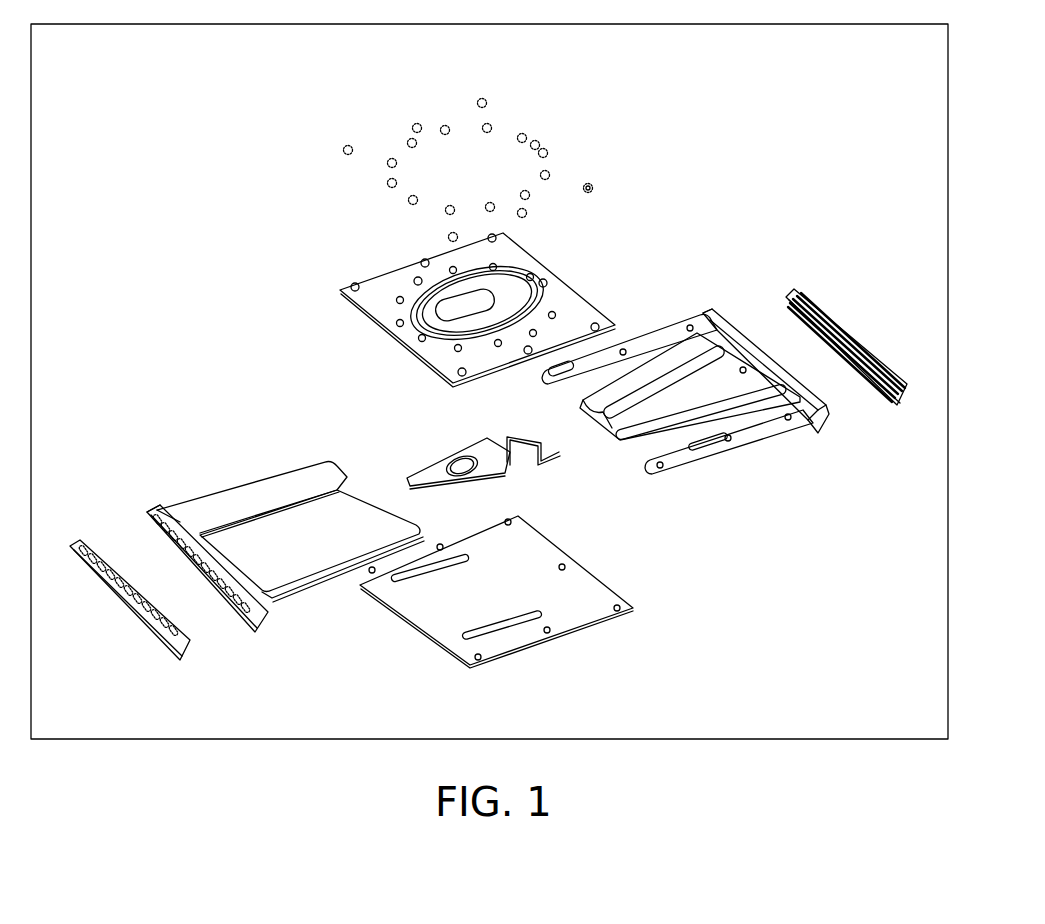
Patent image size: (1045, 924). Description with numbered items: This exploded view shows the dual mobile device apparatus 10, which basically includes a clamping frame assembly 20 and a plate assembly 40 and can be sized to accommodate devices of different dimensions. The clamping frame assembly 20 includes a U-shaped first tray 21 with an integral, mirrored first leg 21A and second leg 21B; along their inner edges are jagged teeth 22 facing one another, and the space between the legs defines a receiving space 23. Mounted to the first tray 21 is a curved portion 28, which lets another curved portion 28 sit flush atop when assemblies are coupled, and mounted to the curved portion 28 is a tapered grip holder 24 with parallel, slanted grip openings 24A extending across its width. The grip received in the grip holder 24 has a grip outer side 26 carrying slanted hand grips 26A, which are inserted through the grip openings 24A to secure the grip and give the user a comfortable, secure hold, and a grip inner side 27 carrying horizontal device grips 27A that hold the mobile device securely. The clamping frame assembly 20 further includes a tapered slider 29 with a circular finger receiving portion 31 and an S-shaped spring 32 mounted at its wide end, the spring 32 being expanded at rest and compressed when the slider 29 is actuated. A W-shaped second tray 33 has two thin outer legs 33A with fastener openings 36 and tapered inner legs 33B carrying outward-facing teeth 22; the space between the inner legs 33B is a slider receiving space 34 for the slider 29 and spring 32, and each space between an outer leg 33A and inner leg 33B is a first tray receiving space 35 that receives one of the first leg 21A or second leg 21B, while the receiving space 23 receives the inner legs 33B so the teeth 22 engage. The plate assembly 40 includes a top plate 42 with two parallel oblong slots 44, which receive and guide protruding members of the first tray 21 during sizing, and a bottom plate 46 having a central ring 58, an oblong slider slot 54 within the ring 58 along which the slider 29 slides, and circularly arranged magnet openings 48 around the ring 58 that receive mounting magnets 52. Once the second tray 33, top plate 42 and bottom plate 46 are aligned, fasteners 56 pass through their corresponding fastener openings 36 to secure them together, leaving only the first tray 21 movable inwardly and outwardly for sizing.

The dual mobile device apparatus 10 is at (185, 219).
The clamping frame assembly 20 is at (270, 465).
The first tray 21 is at (290, 588).
The first leg 21A is at (203, 508).
The second leg 21B is at (332, 555).
The teeth 22 is at (262, 512).
The receiving space 23 is at (347, 513).
The grip holder 24 is at (254, 632).
The grip openings 24A is at (230, 599).
The grip outer side 26 is at (166, 658).
The hand grips 26A is at (139, 623).
The grip inner side 27 is at (898, 404).
The device grips 27A is at (797, 297).
The curved portion 28 is at (156, 508).
The slider 29 is at (423, 482).
The finger receiving portion 31 is at (460, 472).
The spring 32 is at (553, 454).
The second tray 33 is at (778, 429).
The outer legs 33A is at (560, 370).
The inner legs 33B is at (603, 412).
The slider receiving space 34 is at (716, 386).
The first tray receiving space 35 is at (584, 384).
The fastener openings 36 is at (354, 284).
The plate assembly 40 is at (352, 314).
The top plate 42 is at (588, 590).
The slots 44 is at (486, 636).
The bottom plate 46 is at (391, 293).
The magnet openings 48 is at (418, 278).
The mounting magnets 52 is at (445, 125).
The slider slot 54 is at (446, 320).
The fasteners 56 is at (588, 183).
The ring 58 is at (537, 297).